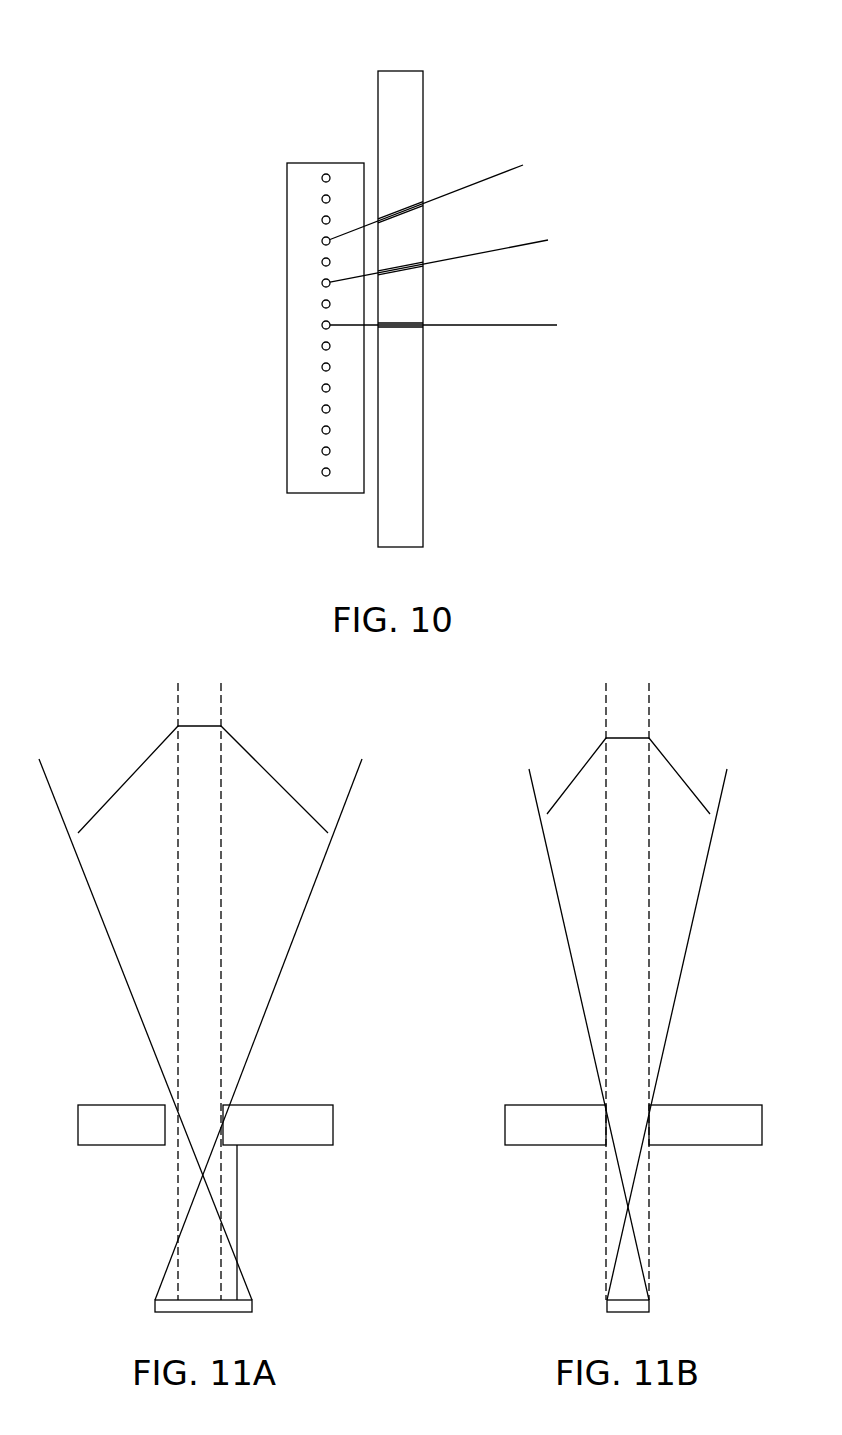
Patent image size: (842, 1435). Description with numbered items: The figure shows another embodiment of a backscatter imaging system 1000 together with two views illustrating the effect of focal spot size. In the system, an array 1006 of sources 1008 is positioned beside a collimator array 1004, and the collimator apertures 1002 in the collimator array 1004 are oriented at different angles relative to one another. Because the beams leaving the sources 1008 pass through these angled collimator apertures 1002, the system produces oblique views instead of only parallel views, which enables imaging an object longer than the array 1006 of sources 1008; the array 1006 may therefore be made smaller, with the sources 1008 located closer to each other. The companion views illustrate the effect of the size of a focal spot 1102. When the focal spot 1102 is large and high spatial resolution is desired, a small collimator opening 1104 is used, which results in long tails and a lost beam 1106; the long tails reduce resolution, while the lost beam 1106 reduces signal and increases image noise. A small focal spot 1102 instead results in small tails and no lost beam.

In FIG. 10, the backscatter imaging system 1000 is at (198, 62).
In FIG. 10, the collimator apertures 1002 is at (430, 190).
In FIG. 10, the collimator array 1004 is at (406, 80).
In FIG. 10, the array of sources 1006 is at (287, 197).
In FIG. 10, the sources 1008 is at (322, 325).
In FIG. 11A, the focal spot 1102 is at (155, 1305).
In FIG. 11B, the focal spot 1102 is at (607, 1305).
In FIG. 11A, the collimator opening 1104 is at (155, 1176).
In FIG. 11B, the collimator opening 1104 is at (586, 1175).
In FIG. 11A, the lost beam 1106 is at (238, 1223).